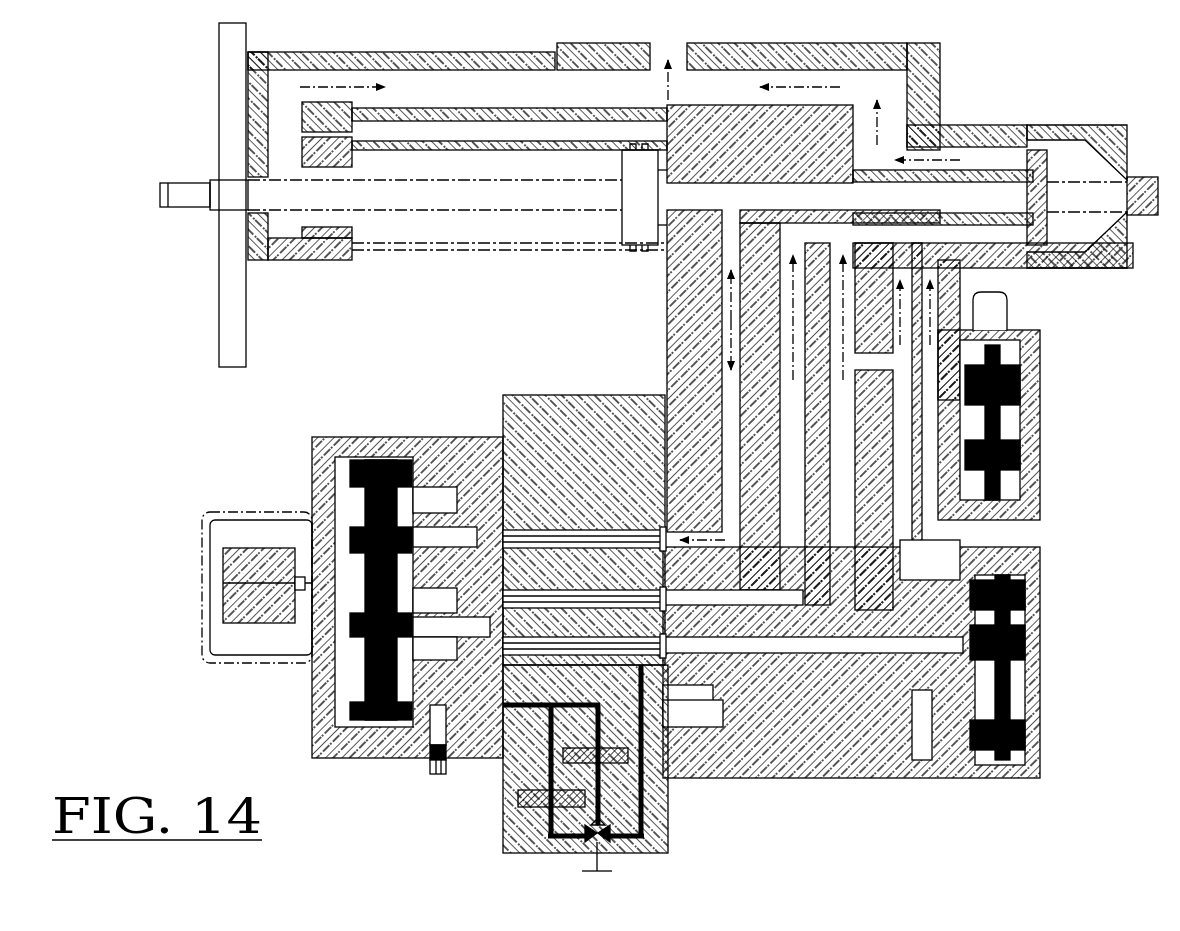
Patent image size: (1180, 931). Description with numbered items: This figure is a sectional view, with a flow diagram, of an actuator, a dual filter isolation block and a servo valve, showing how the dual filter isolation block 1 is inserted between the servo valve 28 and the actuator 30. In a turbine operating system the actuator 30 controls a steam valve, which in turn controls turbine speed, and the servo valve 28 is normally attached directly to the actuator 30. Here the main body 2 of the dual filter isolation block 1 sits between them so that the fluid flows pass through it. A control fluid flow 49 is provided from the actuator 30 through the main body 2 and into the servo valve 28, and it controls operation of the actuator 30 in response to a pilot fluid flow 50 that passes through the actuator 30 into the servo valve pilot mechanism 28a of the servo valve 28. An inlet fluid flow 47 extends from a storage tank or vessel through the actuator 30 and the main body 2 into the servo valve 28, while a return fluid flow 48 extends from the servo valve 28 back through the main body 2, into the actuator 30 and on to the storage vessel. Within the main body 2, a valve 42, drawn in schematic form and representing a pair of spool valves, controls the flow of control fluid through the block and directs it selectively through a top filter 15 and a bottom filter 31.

The dual filter isolation block 1 is at (500, 360).
The main body 2 is at (498, 835).
The top filter 15 is at (660, 820).
The servo valve 28 is at (333, 432).
The servo valve pilot mechanism 28a is at (233, 535).
The actuator 30 is at (658, 268).
The bottom filter 31 is at (535, 808).
The valve 42 is at (615, 862).
The inlet fluid flow 47 is at (735, 655).
The return fluid flow 48 is at (600, 600).
The control fluid flow 49 is at (555, 530).
The pilot fluid flow 50 is at (470, 710).